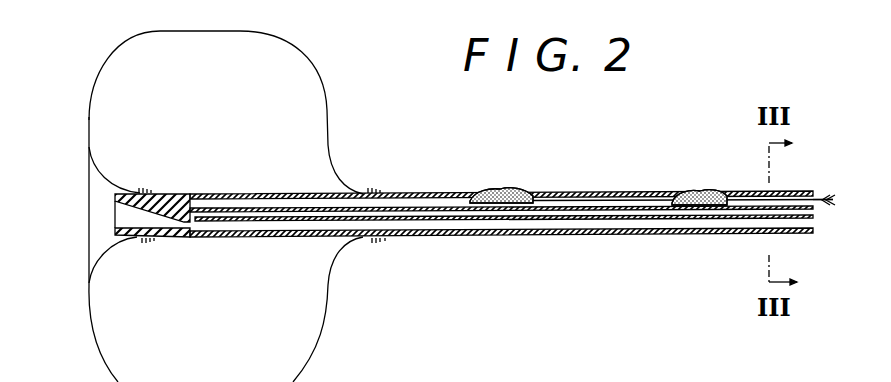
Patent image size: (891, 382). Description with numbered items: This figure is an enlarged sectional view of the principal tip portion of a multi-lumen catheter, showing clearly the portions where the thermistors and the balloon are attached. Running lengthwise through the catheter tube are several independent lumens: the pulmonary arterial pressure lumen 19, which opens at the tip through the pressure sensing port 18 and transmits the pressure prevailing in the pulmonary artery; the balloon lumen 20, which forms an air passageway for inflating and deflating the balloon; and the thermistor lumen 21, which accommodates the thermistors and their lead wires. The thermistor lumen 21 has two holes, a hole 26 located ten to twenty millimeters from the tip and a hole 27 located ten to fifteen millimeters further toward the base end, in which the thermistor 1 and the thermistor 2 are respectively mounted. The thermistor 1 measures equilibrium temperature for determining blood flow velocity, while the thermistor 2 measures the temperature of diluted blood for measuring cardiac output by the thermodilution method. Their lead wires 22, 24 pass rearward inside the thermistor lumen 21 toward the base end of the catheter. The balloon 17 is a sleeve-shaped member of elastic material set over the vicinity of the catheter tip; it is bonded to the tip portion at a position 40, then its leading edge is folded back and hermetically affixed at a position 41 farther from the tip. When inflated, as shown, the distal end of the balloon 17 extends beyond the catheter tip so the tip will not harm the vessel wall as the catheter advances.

The thermistor 1 is at (503, 191).
The thermistor 2 is at (692, 189).
The balloon 17 is at (326, 99).
The pressure sensing port 18 is at (122, 219).
The pulmonary arterial pressure lumen 19 is at (462, 225).
The balloon lumen 20 is at (414, 213).
The thermistor lumen 21 is at (620, 193).
The lead wire 22 is at (822, 198).
The lead wire 24 is at (822, 204).
The hole 26 is at (488, 190).
The hole 27 is at (707, 189).
The bonding position 40 is at (150, 191).
The affixing position 41 is at (389, 190).